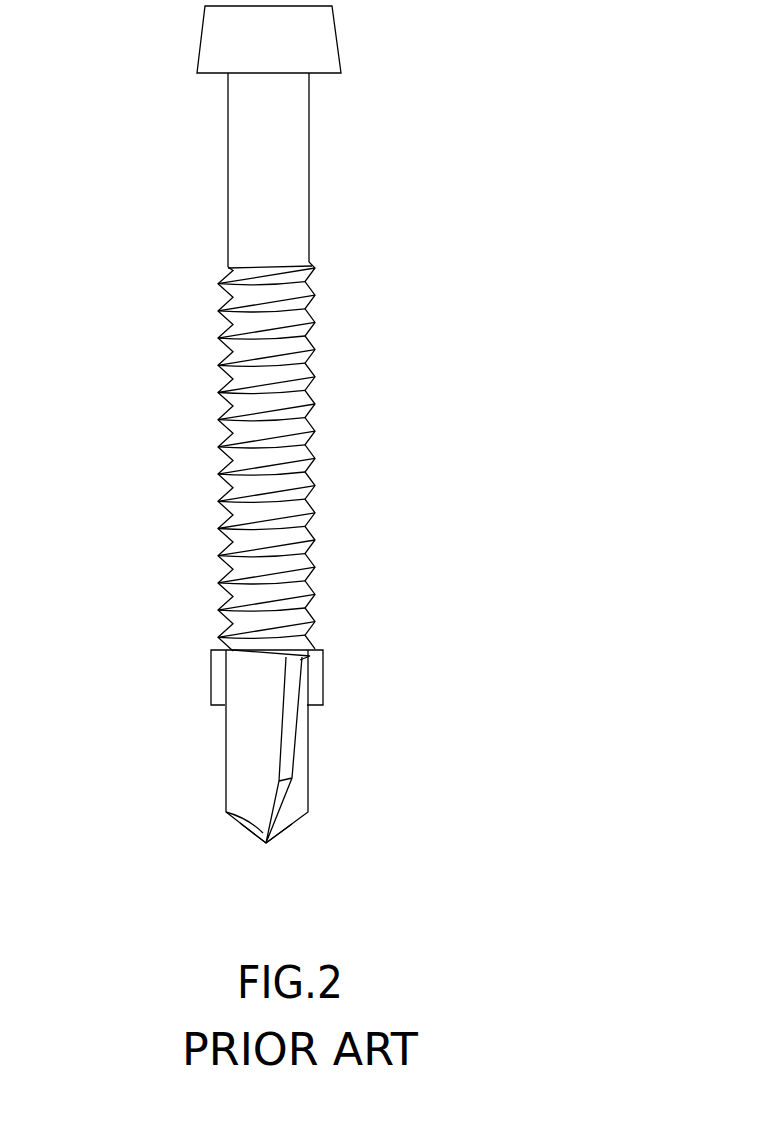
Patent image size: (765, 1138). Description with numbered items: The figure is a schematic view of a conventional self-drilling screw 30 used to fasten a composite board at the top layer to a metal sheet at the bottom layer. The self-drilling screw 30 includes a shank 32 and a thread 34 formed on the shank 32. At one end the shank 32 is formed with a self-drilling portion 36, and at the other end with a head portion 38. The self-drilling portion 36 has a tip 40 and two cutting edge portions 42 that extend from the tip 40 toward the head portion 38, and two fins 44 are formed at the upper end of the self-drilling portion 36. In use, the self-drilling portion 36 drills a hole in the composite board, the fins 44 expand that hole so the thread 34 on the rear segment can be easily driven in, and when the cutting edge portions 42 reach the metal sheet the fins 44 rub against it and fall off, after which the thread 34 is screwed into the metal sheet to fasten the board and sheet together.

The self-drilling screw 30 is at (162, 483).
The shank 32 is at (293, 420).
The thread 34 is at (305, 321).
The self-drilling portion 36 is at (250, 758).
The head portion 38 is at (319, 42).
The tip 40 is at (266, 845).
The cutting edge portions 42 is at (300, 763).
The fins 44 is at (312, 673).